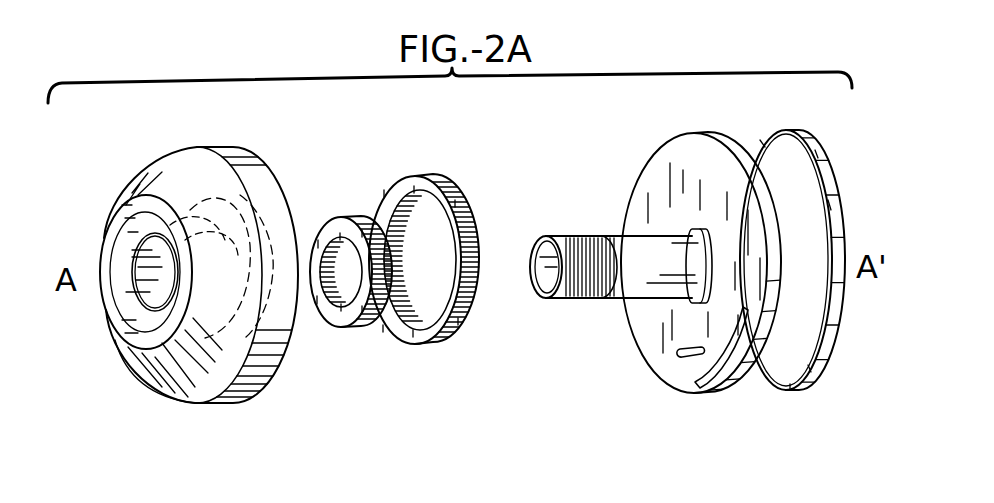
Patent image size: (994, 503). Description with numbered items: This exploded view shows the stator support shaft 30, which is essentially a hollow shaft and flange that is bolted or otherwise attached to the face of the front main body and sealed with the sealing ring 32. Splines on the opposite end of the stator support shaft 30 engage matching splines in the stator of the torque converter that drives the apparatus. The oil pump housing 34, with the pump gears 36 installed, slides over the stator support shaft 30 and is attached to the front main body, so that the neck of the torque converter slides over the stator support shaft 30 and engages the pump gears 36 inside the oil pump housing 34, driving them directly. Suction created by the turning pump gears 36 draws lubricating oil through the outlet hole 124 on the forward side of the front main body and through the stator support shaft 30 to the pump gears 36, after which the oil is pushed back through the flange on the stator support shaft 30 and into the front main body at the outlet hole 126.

The stator support shaft 30 is at (633, 310).
The sealing ring 32 is at (792, 389).
The oil pump housing 34 is at (233, 146).
The pump gears 36 is at (410, 177).
The outlet hole 124 is at (667, 381).
The outlet hole 126 is at (691, 360).